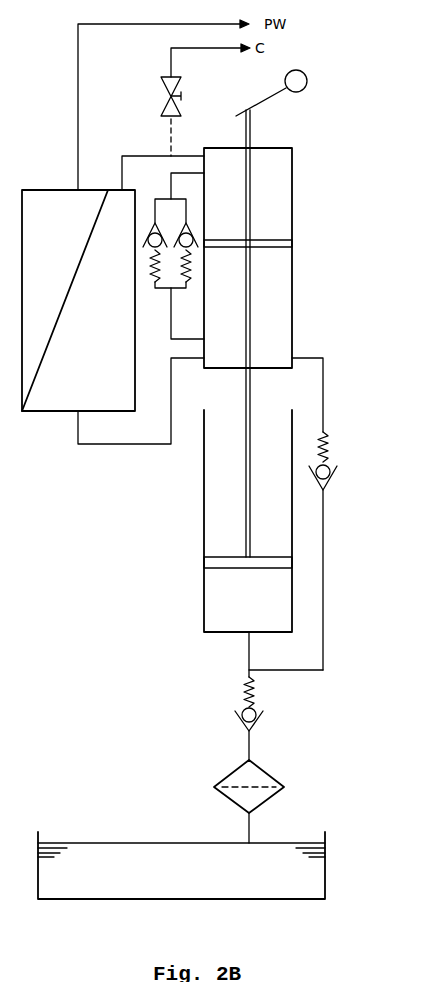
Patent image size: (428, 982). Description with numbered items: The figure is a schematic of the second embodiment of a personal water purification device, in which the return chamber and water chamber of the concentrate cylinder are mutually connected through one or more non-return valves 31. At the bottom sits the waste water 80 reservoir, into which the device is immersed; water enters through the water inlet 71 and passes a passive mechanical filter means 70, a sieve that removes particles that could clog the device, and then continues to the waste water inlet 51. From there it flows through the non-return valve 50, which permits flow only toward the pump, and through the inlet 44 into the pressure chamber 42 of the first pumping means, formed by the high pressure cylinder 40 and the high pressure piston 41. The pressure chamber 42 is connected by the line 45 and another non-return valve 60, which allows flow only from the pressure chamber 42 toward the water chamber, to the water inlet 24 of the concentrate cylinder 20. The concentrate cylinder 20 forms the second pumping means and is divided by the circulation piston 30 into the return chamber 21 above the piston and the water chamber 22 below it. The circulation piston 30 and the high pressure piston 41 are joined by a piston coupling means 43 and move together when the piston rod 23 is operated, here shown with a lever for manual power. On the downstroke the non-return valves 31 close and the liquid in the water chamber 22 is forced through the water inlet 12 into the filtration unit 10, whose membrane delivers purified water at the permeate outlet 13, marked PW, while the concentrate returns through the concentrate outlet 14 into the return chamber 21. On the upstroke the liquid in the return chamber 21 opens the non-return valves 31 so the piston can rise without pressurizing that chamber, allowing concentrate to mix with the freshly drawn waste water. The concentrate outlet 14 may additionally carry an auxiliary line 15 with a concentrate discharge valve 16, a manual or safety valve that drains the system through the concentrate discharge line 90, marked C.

The filtration unit 10 is at (43, 186).
The water inlet 12 is at (90, 446).
The permeate outlet 13 is at (77, 132).
The concentrate outlet 14 is at (130, 152).
The auxiliary line 15 is at (180, 134).
The concentrate discharge valve 16 is at (160, 86).
The concentrate cylinder 20 is at (285, 146).
The return chamber 21 is at (262, 186).
The water chamber 22 is at (267, 287).
The piston rod 23 is at (252, 126).
The water inlet 24 is at (305, 357).
The circulation piston 30 is at (293, 244).
The non-return valves 31 is at (184, 226).
The high pressure cylinder 40 is at (203, 585).
The high pressure piston 41 is at (208, 562).
The pressure chamber 42 is at (220, 608).
The piston coupling means 43 is at (246, 416).
The inlet 44 is at (244, 643).
The line 45 is at (288, 672).
The non-return valve 50 is at (234, 716).
The waste water inlet 51 is at (243, 748).
The non-return valve 60 is at (318, 484).
The passive mechanical filter means 70 is at (228, 768).
The water inlet 71 is at (245, 832).
The waste water 80 is at (160, 855).
The concentrate discharge line 90 is at (188, 50).